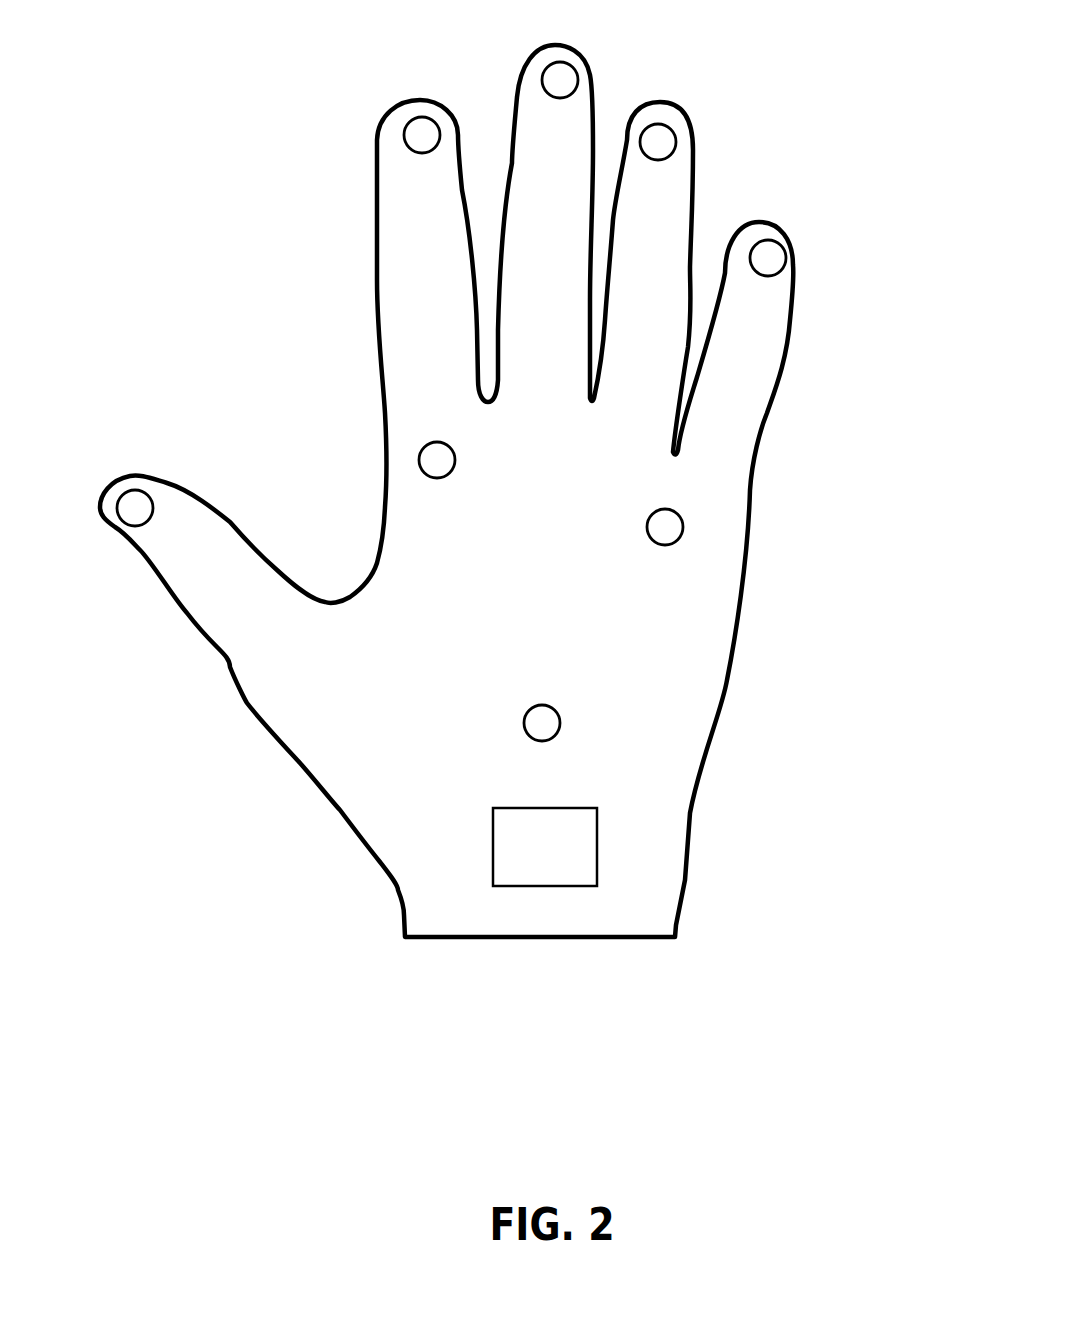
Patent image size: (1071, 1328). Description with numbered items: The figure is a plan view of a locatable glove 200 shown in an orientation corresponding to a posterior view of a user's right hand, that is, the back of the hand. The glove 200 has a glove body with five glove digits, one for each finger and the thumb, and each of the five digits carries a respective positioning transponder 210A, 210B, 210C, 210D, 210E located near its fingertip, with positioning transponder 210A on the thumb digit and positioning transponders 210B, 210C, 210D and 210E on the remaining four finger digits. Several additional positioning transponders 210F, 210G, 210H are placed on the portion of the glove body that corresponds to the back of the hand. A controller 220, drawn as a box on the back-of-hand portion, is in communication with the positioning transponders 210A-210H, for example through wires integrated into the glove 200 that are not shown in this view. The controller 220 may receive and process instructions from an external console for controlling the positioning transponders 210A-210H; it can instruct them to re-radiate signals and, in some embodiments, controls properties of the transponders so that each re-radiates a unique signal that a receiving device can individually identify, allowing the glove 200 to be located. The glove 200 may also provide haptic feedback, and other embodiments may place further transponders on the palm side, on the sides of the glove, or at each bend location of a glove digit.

The locatable glove 200 is at (157, 42).
The positioning transponder 210A is at (128, 526).
The positioning transponder 210B is at (404, 135).
The positioning transponder 210C is at (578, 75).
The positioning transponder 210D is at (677, 143).
The positioning transponder 210E is at (832, 277).
The positioning transponder 210F is at (438, 475).
The positioning transponder 210G is at (657, 545).
The positioning transponder 210H is at (537, 740).
The controller 220 is at (559, 867).